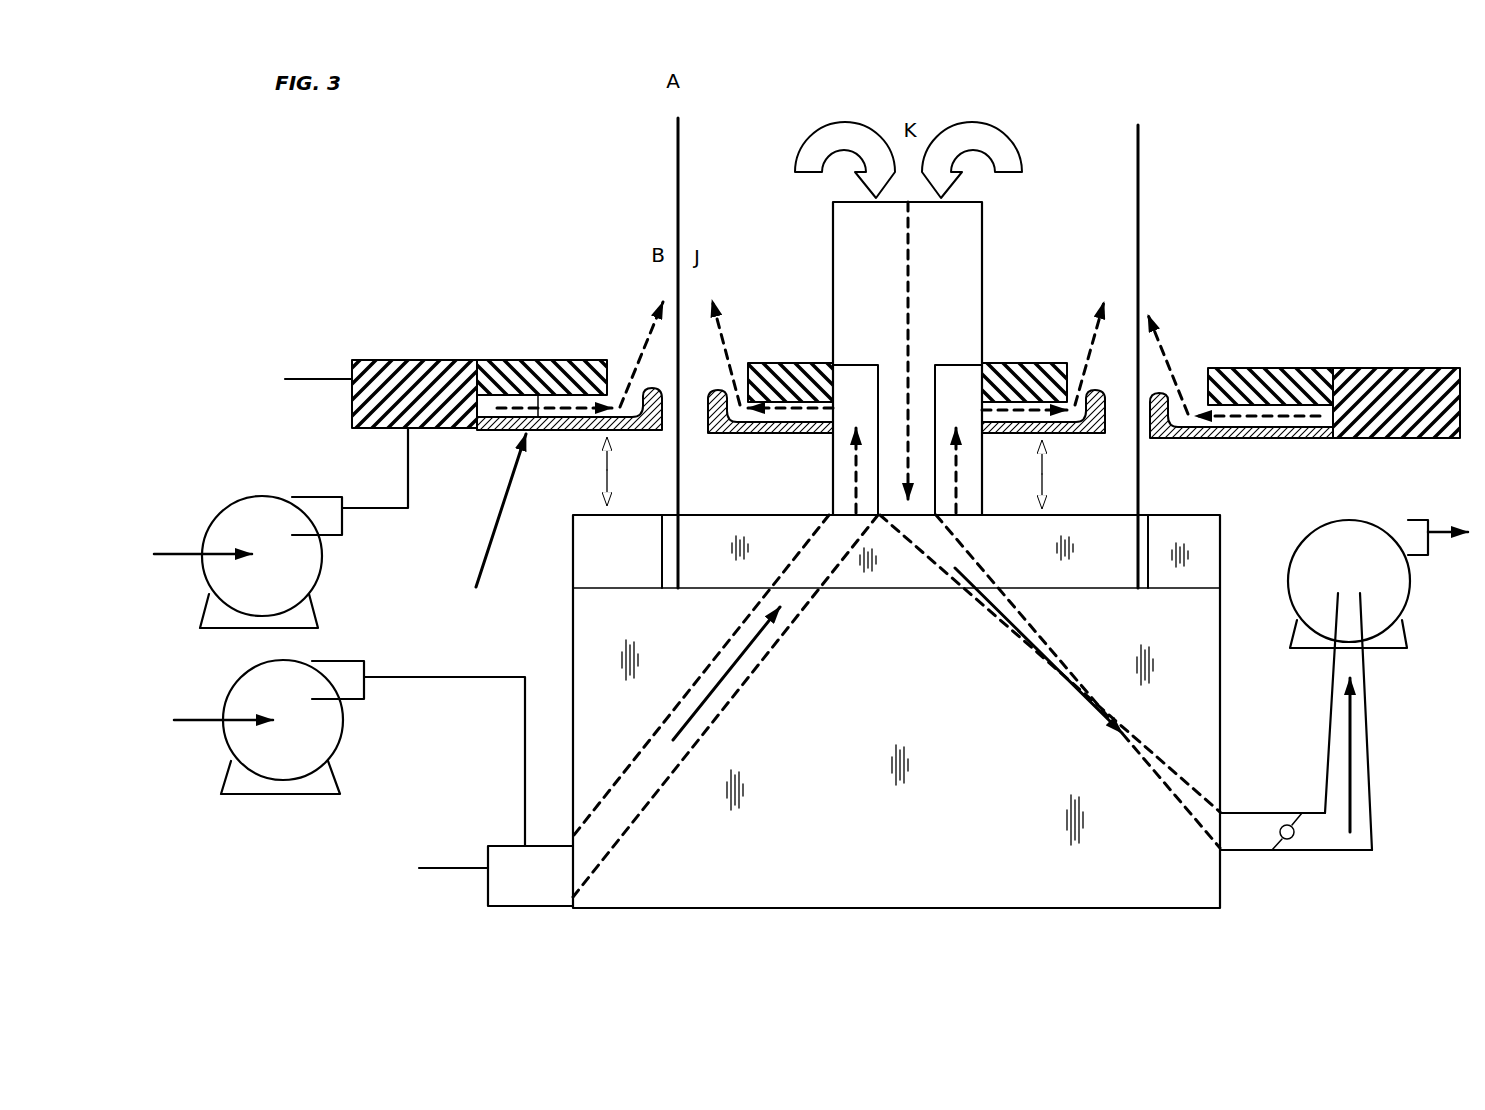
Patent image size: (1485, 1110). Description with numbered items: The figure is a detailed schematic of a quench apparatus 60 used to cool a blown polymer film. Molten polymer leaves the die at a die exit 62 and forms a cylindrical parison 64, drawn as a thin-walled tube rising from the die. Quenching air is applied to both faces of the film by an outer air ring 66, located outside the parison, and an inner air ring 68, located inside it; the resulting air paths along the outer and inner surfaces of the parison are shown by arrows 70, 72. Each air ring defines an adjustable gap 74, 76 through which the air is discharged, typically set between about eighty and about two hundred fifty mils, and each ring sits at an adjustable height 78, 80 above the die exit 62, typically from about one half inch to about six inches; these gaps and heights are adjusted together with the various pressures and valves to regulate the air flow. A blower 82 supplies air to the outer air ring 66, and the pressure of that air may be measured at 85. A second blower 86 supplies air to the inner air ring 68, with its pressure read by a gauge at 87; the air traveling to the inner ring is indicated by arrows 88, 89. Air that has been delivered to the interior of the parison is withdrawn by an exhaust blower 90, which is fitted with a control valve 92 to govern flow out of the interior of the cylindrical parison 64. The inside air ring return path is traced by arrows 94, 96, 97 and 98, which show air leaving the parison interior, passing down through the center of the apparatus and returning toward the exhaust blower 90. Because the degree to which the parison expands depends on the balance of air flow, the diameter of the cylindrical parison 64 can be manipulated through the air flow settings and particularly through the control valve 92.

The quench apparatus 60 is at (560, 170).
The die exit 62 is at (668, 520).
The cylindrical parison 64 is at (677, 175).
The outer air ring 66 is at (415, 360).
The inner air ring 68 is at (795, 362).
The air path arrow 70 is at (648, 342).
The air path arrow 72 is at (727, 345).
The adjustable gap 74 is at (485, 528).
The adjustable gap 76 is at (770, 433).
The adjustable height 78 is at (600, 462).
The adjustable height 80 is at (1050, 460).
The blower 82 is at (205, 522).
The pressure measurement point 85 is at (315, 379).
The blower 86 is at (226, 690).
The pressure gauge 87 is at (440, 868).
The air flow arrow 88 is at (753, 647).
The air flow arrow 89 is at (848, 495).
The exhaust blower 90 is at (1405, 600).
The control valve 92 is at (1283, 825).
The return path arrow 94 is at (838, 124).
The return path arrow 96 is at (905, 280).
The return path arrow 97 is at (1063, 675).
The return path arrow 98 is at (1350, 732).